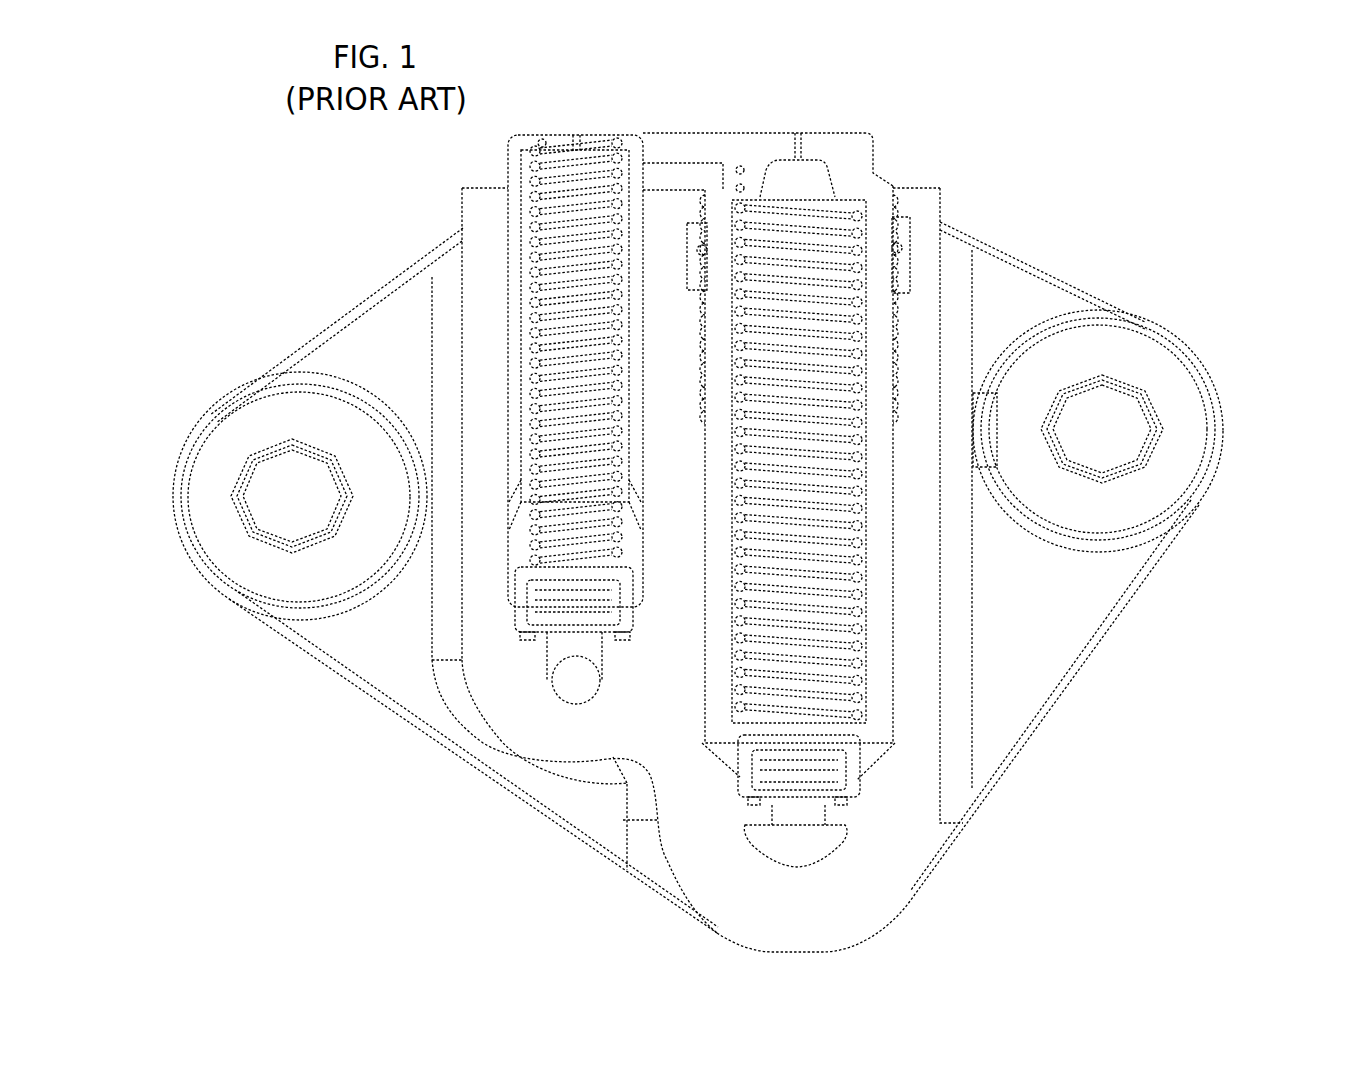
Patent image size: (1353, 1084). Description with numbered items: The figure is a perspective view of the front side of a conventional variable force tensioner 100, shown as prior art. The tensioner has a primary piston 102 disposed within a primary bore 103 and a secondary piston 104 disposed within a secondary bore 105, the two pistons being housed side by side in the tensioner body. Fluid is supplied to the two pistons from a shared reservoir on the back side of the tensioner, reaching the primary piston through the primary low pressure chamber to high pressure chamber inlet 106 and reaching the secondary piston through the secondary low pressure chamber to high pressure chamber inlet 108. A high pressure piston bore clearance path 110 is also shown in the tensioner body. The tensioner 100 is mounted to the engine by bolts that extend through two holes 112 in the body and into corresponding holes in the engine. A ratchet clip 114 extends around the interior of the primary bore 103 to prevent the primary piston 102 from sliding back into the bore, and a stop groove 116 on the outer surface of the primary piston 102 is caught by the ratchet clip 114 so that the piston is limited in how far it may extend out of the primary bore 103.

The variable force tensioner 100 is at (669, 514).
The primary piston 102 is at (867, 142).
The primary bore 103 is at (705, 318).
The secondary piston 104 is at (510, 215).
The secondary bore 105 is at (645, 273).
The primary low pressure chamber to high pressure chamber inlet 106 is at (812, 853).
The secondary low pressure chamber to high pressure chamber inlet 108 is at (562, 688).
The high pressure piston bore clearance path 110 is at (865, 758).
The holes 112 is at (280, 503).
The ratchet clip 114 is at (900, 247).
The stop groove 116 is at (885, 510).